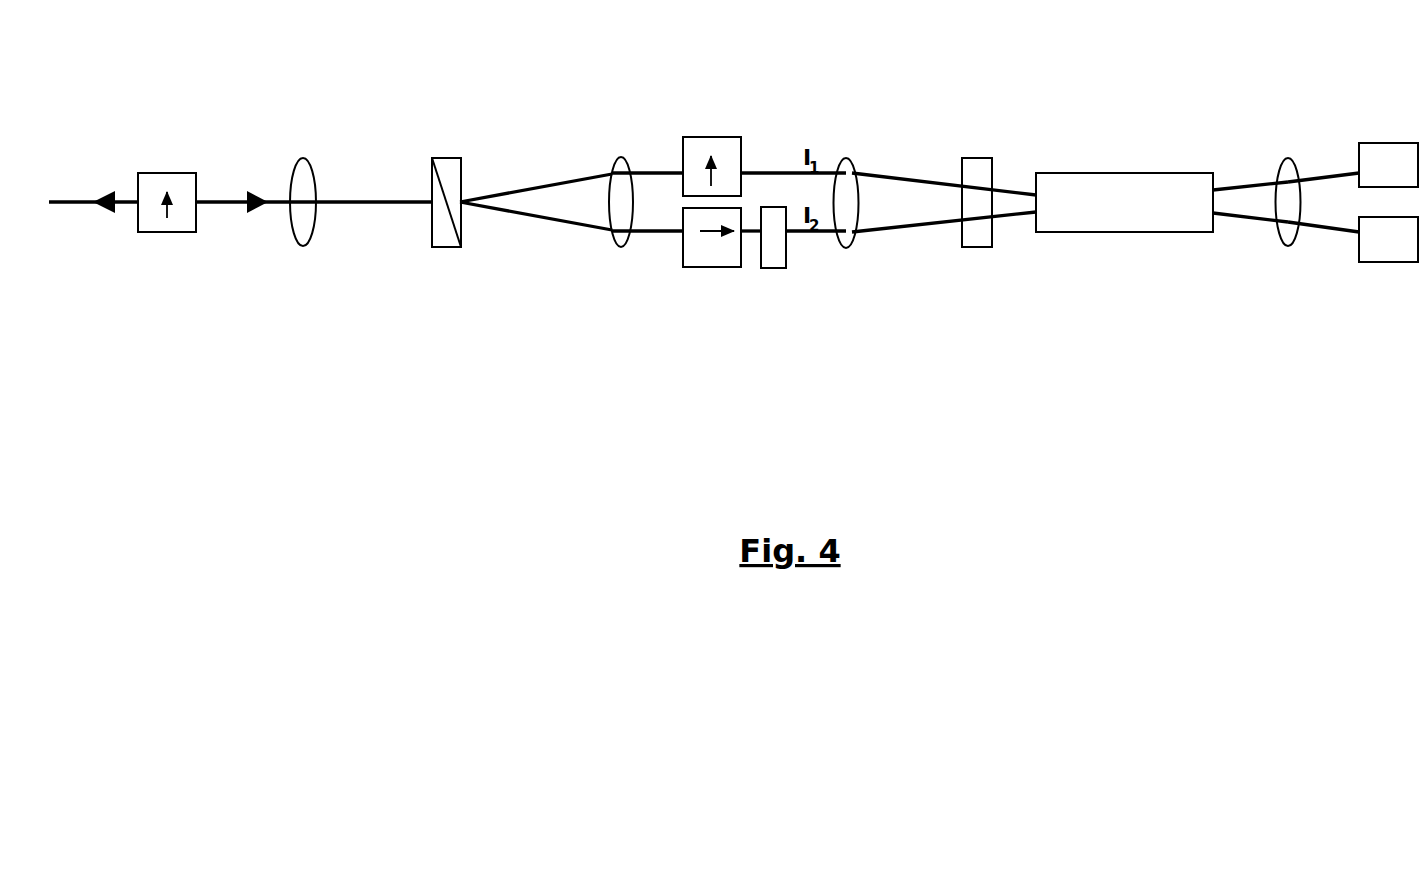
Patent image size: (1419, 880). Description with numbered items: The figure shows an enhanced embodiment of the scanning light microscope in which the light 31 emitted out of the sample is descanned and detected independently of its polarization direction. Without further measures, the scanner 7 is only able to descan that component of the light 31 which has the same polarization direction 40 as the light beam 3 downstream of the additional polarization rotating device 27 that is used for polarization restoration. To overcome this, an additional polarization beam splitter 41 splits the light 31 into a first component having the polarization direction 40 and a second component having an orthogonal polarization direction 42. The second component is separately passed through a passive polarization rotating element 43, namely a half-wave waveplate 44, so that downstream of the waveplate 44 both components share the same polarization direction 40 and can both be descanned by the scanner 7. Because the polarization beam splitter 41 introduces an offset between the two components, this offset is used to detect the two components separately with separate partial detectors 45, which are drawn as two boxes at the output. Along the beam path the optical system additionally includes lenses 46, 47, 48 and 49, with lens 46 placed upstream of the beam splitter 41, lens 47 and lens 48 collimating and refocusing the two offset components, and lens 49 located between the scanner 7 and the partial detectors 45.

The light beam 3 is at (77, 202).
The scanner 7 is at (1127, 171).
The additional polarization rotating device 27 is at (976, 156).
The light 31 is at (253, 222).
The polarization direction 40 is at (161, 170).
The polarization beam splitter 41 is at (445, 156).
The orthogonal polarization direction 42 is at (703, 270).
The passive polarization rotating element 43 is at (783, 300).
The λ/2 waveplate 44 is at (773, 270).
The partial detectors 45 is at (1395, 143).
The lens 46 is at (300, 155).
The lens 47 is at (622, 155).
The lens 48 is at (849, 156).
The lens 49 is at (1287, 156).